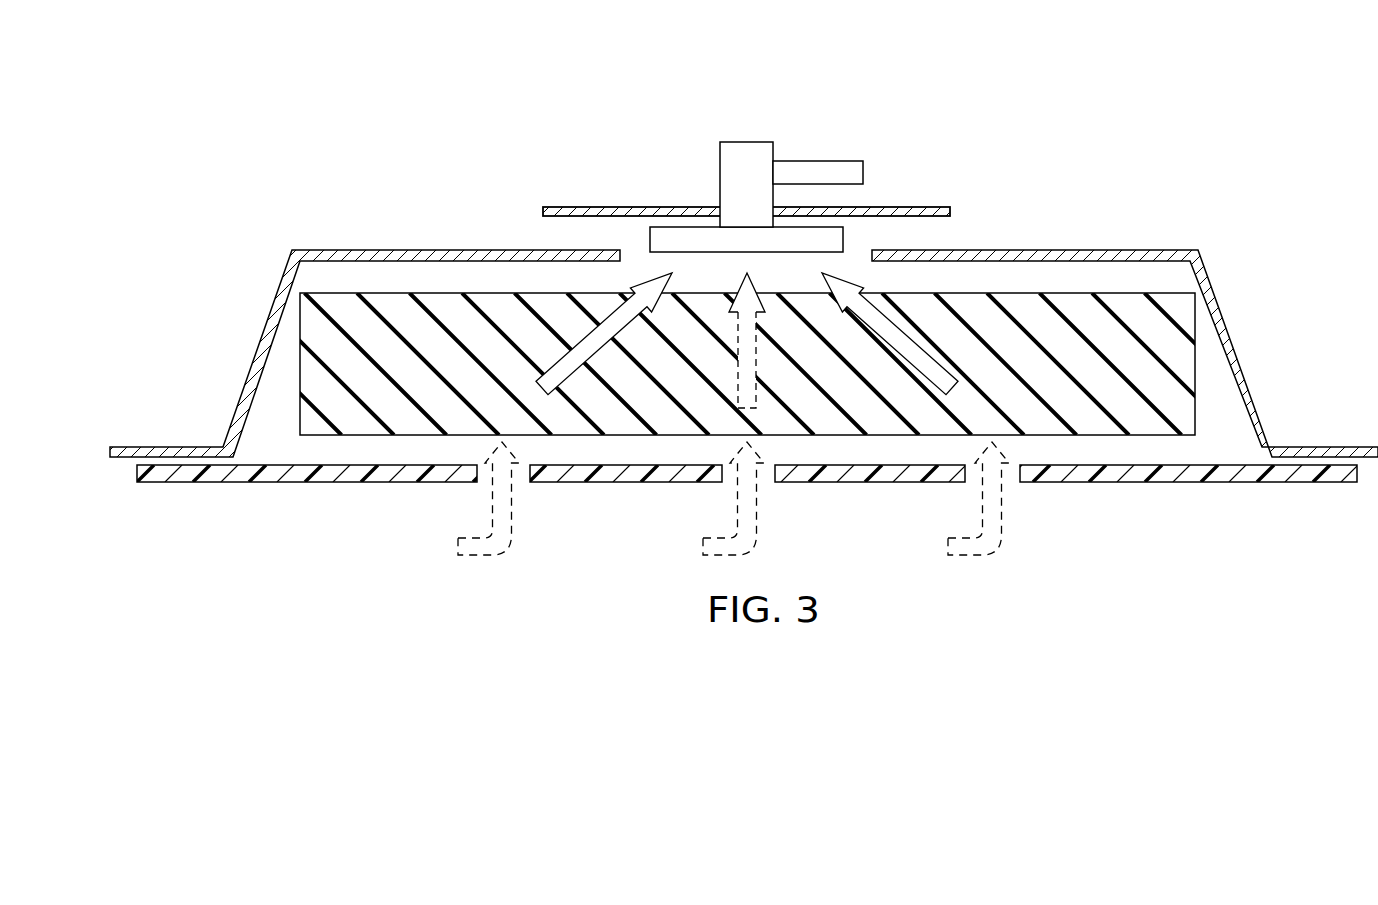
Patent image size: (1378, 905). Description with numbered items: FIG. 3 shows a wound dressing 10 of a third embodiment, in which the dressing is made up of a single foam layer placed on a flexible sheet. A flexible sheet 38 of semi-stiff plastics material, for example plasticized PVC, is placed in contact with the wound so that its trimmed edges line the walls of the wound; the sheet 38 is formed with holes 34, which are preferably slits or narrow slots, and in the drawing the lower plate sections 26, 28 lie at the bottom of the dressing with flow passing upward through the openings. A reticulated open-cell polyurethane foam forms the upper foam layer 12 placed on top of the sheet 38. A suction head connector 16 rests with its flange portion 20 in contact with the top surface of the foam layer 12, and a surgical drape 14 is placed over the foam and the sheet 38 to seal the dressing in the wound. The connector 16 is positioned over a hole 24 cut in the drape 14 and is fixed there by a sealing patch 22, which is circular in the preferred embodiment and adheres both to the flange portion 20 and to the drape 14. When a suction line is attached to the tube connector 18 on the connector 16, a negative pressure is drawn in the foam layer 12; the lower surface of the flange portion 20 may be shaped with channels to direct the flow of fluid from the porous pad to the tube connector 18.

The sensor assembly 10 is at (214, 99).
The upper foam layer 12 is at (485, 293).
The drape 14 is at (1148, 250).
The connector 16 is at (745, 142).
The tube connector 18 is at (820, 161).
The flange portion 20 is at (845, 240).
The sealing patch 22 is at (582, 207).
The hole 24 is at (636, 250).
The base plate 26 is at (1210, 465).
The opening 28 is at (1145, 462).
The holes 34 is at (520, 475).
The flexible sheet 38 is at (287, 482).